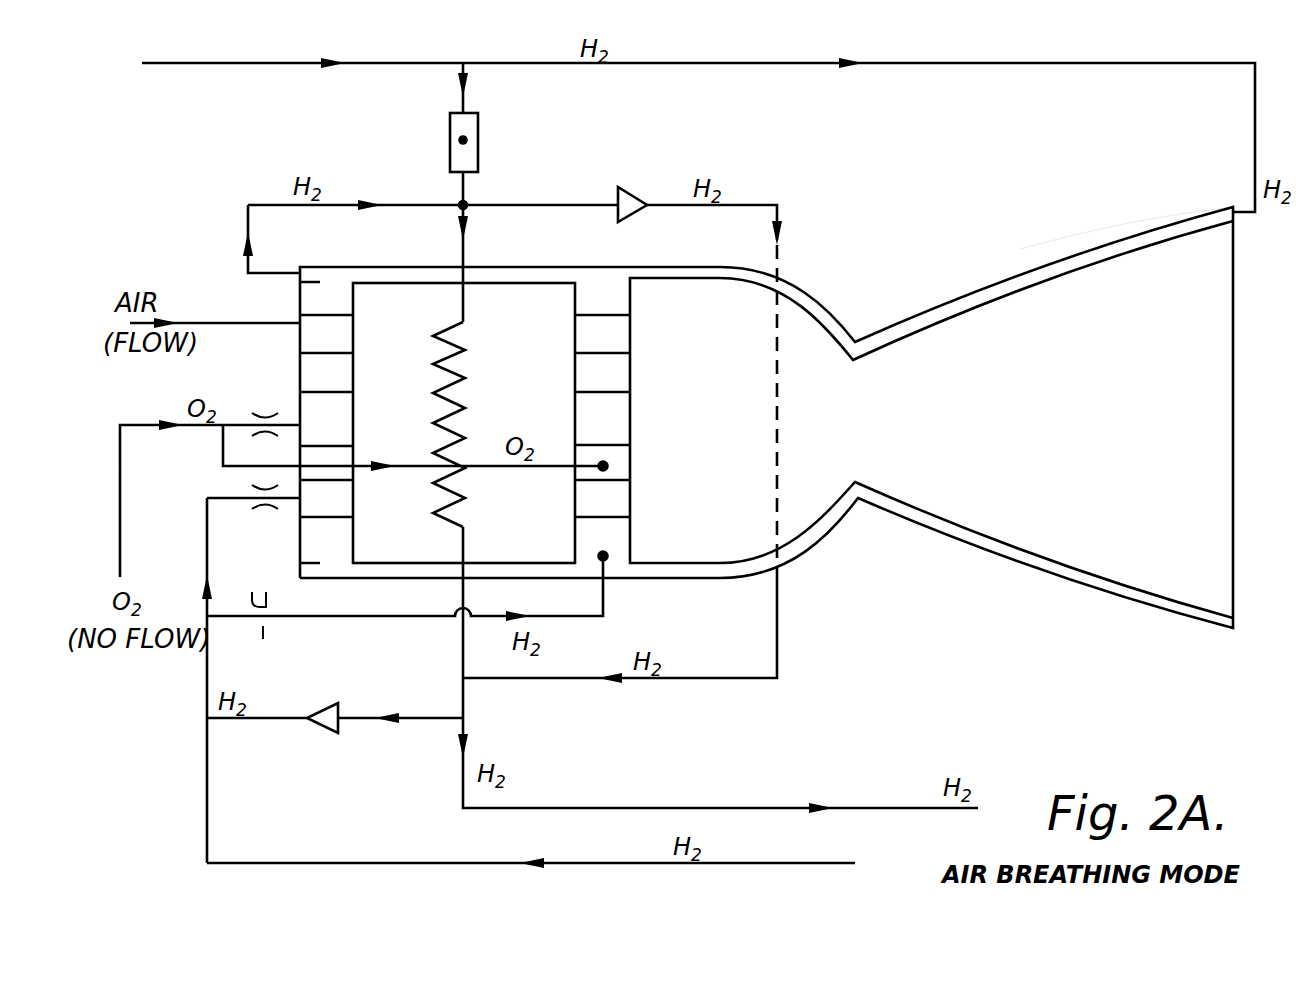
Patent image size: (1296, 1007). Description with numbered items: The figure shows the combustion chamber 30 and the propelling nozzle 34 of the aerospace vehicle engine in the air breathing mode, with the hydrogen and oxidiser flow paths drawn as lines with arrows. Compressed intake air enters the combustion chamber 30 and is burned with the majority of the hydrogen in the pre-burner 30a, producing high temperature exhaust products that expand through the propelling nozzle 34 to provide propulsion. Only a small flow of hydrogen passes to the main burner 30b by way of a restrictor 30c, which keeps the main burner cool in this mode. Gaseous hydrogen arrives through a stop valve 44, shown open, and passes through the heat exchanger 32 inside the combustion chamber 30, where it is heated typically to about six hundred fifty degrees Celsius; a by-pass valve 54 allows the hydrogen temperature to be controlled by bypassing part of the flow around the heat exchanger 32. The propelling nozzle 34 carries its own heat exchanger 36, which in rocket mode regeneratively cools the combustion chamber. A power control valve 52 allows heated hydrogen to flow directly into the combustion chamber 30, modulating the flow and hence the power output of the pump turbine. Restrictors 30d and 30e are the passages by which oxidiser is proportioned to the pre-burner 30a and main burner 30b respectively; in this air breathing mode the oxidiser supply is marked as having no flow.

The combustion chamber 30 is at (478, 461).
The pre-burner 30a is at (340, 336).
The main burner 30b is at (612, 336).
The restrictor 30c is at (259, 602).
The restrictor 30d is at (267, 410).
The restrictor 30e is at (263, 514).
The heat exchanger 32 is at (470, 352).
The propelling nozzle 34 is at (766, 417).
The heat exchanger 36 is at (1061, 260).
The stop valve 44 is at (472, 149).
The power control valve 52 is at (330, 727).
The by-pass valve 54 is at (630, 200).